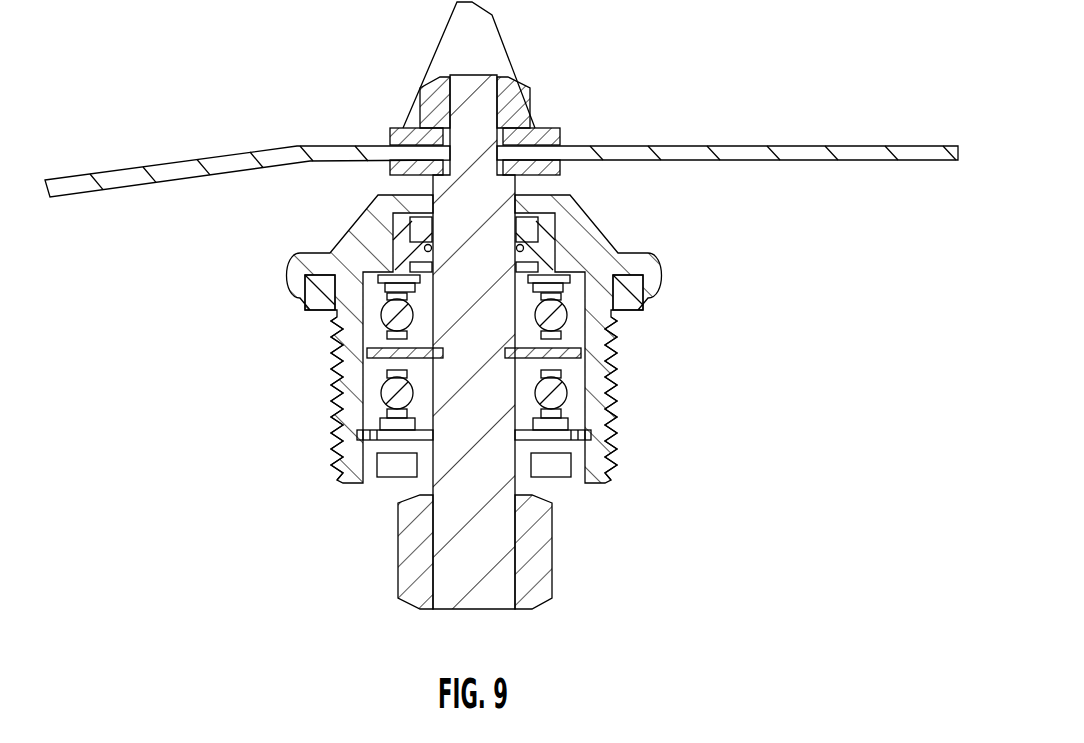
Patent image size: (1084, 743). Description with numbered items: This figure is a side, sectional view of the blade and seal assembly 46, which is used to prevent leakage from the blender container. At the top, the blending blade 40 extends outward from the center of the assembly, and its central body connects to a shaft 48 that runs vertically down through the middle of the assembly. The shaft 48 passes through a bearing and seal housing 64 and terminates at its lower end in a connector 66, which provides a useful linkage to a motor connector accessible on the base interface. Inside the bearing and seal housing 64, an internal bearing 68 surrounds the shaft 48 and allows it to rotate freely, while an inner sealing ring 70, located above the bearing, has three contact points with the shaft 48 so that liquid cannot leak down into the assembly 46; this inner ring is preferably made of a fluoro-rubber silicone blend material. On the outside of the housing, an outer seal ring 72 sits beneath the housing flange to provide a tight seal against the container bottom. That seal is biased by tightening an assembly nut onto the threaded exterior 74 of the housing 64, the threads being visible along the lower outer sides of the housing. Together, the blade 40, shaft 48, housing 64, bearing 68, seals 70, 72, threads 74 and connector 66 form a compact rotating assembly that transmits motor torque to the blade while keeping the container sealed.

The blending blade 40 is at (257, 158).
The blade and seal assembly 46 is at (260, 330).
The shaft 48 is at (493, 76).
The bearing and seal housing 64 is at (360, 236).
The connector 66 is at (540, 585).
The internal bearing 68 is at (590, 323).
The inner sealing ring 70 is at (548, 247).
The outer seal ring 72 is at (653, 307).
The threaded exterior 74 is at (335, 413).